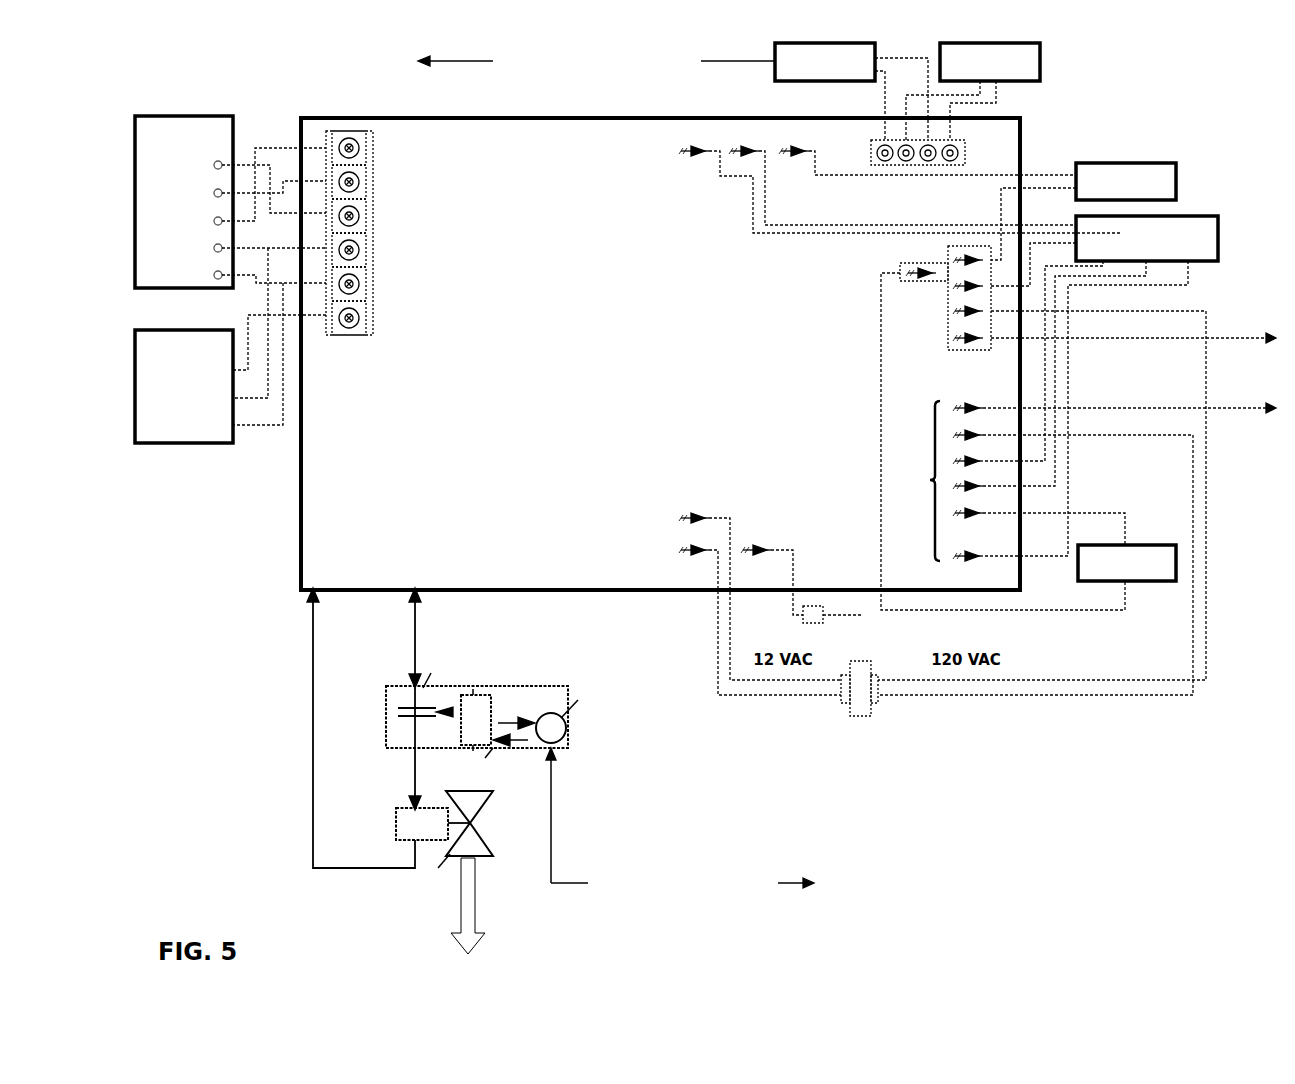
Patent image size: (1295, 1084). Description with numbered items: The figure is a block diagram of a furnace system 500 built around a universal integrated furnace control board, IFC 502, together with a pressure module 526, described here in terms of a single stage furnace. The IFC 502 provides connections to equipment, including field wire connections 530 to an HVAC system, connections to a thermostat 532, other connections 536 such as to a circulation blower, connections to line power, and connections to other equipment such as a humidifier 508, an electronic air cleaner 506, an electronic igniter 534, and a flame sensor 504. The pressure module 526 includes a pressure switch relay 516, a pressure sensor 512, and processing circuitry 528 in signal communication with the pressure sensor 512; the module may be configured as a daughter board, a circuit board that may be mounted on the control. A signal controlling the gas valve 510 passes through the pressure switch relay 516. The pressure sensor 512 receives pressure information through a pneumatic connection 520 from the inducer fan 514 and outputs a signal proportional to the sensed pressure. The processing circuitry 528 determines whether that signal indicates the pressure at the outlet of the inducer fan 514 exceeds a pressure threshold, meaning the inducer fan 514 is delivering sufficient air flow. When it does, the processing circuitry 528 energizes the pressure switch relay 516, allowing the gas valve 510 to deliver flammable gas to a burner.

The furnace system 500 is at (1168, 90).
The universal integrated furnace control board (IFC) 502 is at (788, 406).
The flame sensor 504 is at (768, 540).
The electronic air cleaner 506 is at (1079, 547).
The humidifier 508 is at (1126, 181).
The gas valve 510 is at (378, 753).
The pressure sensor 512 is at (532, 702).
The inducer fan 514 is at (851, 91).
The pressure switch relay 516 is at (431, 638).
The pneumatic connection 520 is at (616, 473).
The pressure module 526 is at (387, 762).
The processing circuitry 528 is at (488, 851).
The field wire connections 530 is at (206, 108).
The thermostat 532 is at (230, 345).
The electronic igniter 534 is at (973, 91).
The connections to circulation blower 536 is at (1077, 455).